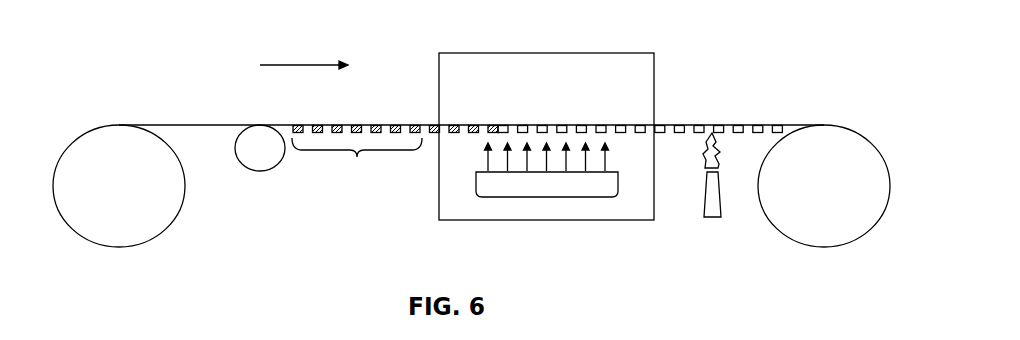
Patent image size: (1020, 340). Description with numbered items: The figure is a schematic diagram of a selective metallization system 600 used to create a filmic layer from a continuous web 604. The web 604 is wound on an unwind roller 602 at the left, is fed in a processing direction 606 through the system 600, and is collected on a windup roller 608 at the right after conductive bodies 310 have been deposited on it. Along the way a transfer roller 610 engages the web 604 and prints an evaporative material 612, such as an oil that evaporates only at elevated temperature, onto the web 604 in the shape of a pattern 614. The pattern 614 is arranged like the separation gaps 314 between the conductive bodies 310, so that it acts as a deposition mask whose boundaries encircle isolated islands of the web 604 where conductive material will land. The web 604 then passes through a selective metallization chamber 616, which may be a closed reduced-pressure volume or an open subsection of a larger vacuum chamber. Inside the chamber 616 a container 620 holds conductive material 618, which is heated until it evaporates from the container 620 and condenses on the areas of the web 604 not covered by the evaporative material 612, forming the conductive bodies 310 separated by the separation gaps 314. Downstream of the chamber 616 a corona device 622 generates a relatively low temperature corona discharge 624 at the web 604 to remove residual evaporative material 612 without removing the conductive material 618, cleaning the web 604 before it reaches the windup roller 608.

The selective metallization system 600 is at (745, 31).
The unwind roller 602 is at (118, 237).
The web 604 is at (198, 124).
The processing direction 606 is at (303, 66).
The windup roller 608 is at (825, 235).
The transfer roller 610 is at (260, 162).
The evaporative material 612 is at (340, 124).
The pattern 614 is at (395, 142).
The selective metallization chamber 616 is at (508, 221).
The conductive material 618 is at (607, 160).
The container 620 is at (590, 188).
The corona device 622 is at (712, 218).
The corona discharge 624 is at (707, 150).
The conductive bodies 310 is at (602, 124).
The separation gaps 314 is at (747, 140).